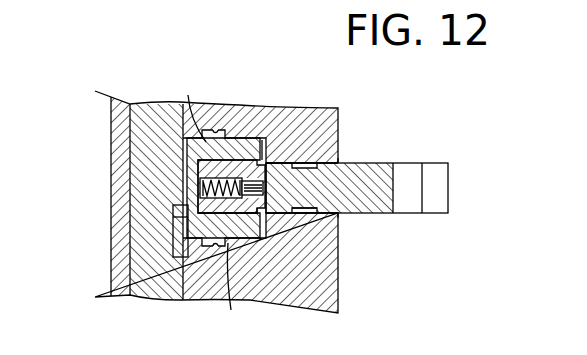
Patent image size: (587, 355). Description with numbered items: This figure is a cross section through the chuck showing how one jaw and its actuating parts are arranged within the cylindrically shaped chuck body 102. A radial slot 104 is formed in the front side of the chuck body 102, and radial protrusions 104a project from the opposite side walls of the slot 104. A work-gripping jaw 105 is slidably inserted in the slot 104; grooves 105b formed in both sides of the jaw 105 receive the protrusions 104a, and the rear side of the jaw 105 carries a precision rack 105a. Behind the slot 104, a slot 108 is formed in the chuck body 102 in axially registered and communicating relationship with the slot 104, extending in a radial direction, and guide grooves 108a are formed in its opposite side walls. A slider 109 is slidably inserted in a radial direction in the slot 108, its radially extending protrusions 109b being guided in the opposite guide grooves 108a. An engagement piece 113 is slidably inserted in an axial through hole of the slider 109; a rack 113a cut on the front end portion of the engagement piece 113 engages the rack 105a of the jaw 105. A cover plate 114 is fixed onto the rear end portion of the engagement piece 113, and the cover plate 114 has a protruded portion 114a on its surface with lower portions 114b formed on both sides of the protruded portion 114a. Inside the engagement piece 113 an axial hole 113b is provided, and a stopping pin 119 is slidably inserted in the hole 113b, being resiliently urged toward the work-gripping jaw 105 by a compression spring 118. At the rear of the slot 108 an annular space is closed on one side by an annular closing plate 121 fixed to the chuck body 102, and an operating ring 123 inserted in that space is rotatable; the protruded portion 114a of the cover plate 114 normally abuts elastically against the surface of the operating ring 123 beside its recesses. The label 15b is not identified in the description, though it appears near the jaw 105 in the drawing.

The chuck body 102 is at (322, 280).
The radial slot 104 is at (339, 214).
The radial protrusion 104a is at (338, 114).
The work-gripping jaw 105 is at (390, 167).
The precision rack 105a is at (267, 215).
The groove 105b is at (304, 167).
The slot 108 is at (245, 110).
The guide groove 108a is at (212, 128).
The slider 109 is at (247, 240).
The radially extending protrusion 109b is at (176, 105).
The engagement piece 113 is at (190, 143).
The rack 113a is at (298, 157).
The hole 113b is at (180, 257).
The cover plate 114 is at (196, 168).
The protruded portion 114a is at (190, 186).
The lower portion 114b is at (184, 228).
The compression spring 118 is at (198, 201).
The stopping pin 119 is at (268, 158).
The annular closing plate 121 is at (111, 197).
The operating ring 123 is at (160, 278).
The shaft portion 15b is at (312, 197).